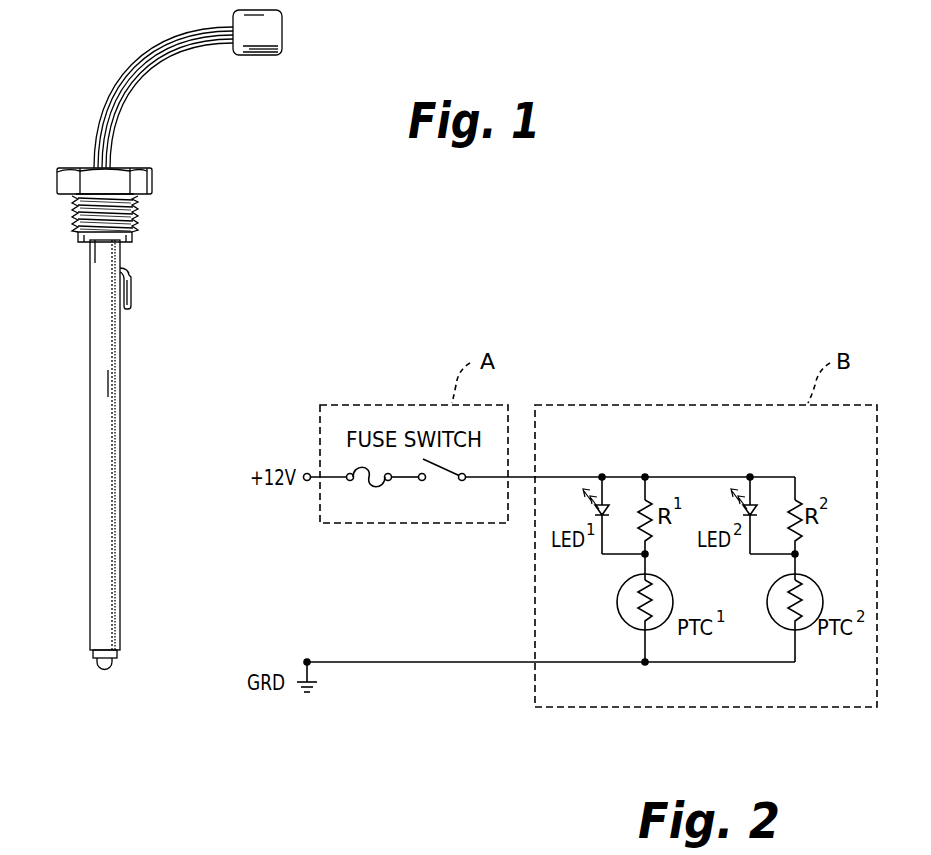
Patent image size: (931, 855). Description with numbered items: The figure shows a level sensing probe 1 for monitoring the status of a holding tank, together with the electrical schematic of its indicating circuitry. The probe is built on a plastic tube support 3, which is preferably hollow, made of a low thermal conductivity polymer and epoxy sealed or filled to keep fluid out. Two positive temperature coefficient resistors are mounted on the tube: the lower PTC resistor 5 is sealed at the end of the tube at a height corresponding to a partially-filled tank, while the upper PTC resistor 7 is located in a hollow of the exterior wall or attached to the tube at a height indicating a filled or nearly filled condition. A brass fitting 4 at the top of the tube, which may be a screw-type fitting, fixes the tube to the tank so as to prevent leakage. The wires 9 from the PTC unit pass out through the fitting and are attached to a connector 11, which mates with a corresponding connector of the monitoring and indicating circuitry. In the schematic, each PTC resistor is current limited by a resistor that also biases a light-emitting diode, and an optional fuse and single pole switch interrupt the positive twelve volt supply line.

The level sensing probe 1 is at (76, 296).
The plastic tube support 3 is at (103, 393).
The brass fitting 4 is at (56, 170).
The PTC resistor 5 is at (113, 660).
The PTC resistor 7 is at (135, 293).
The wires 9 is at (113, 93).
The connector 11 is at (261, 39).